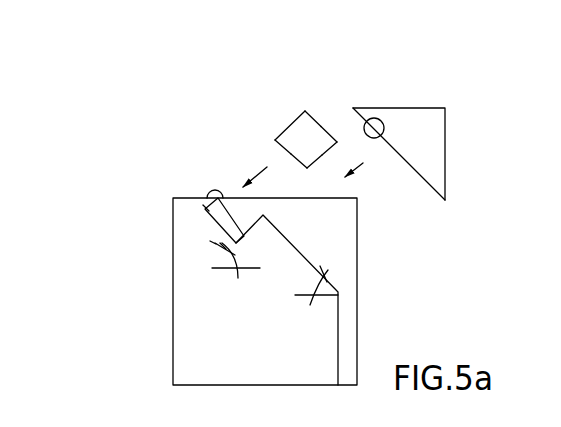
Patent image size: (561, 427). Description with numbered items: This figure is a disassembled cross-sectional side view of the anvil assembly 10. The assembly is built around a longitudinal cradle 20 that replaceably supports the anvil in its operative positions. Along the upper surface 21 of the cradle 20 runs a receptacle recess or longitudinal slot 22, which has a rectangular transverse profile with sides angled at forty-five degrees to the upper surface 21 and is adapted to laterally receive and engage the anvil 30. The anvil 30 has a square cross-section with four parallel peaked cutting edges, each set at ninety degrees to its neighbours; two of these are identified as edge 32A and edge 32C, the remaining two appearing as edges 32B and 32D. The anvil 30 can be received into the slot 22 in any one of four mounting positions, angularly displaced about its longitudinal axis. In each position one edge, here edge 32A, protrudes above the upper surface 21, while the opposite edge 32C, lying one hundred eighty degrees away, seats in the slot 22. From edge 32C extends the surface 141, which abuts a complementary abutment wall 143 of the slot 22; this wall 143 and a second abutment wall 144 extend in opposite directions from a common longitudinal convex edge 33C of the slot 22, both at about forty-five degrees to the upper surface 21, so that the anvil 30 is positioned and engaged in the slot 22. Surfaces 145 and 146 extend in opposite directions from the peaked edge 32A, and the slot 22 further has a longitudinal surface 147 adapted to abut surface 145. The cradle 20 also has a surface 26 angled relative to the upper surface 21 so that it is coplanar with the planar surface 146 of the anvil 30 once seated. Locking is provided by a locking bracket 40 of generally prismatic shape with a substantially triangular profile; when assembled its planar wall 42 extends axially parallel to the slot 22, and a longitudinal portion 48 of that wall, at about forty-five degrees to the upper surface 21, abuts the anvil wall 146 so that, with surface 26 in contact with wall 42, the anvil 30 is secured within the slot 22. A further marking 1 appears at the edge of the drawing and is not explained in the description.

The apparatus 1 is at (556, 103).
The anvil assembly 10 is at (112, 65).
The cradle 20 is at (113, 375).
The upper surface 21 is at (197, 198).
The longitudinal slot 22 is at (217, 218).
The surface 26 is at (300, 253).
The anvil 30 is at (360, 52).
The peaked cutting edge 32A is at (307, 110).
The second edge 32B is at (338, 138).
The edge 32C is at (352, 145).
The fourth edge 32D is at (278, 137).
The common convex edge 33C is at (214, 243).
The locking bracket 40 is at (472, 138).
The planar wall 42 is at (398, 153).
The longitudinal portion 48 is at (384, 134).
The surface 141 is at (297, 160).
The abutment wall 143 is at (222, 246).
The abutment wall 144 is at (247, 225).
The surface 145 is at (293, 123).
The surface 146 is at (313, 110).
The longitudinal surface 147 is at (205, 205).